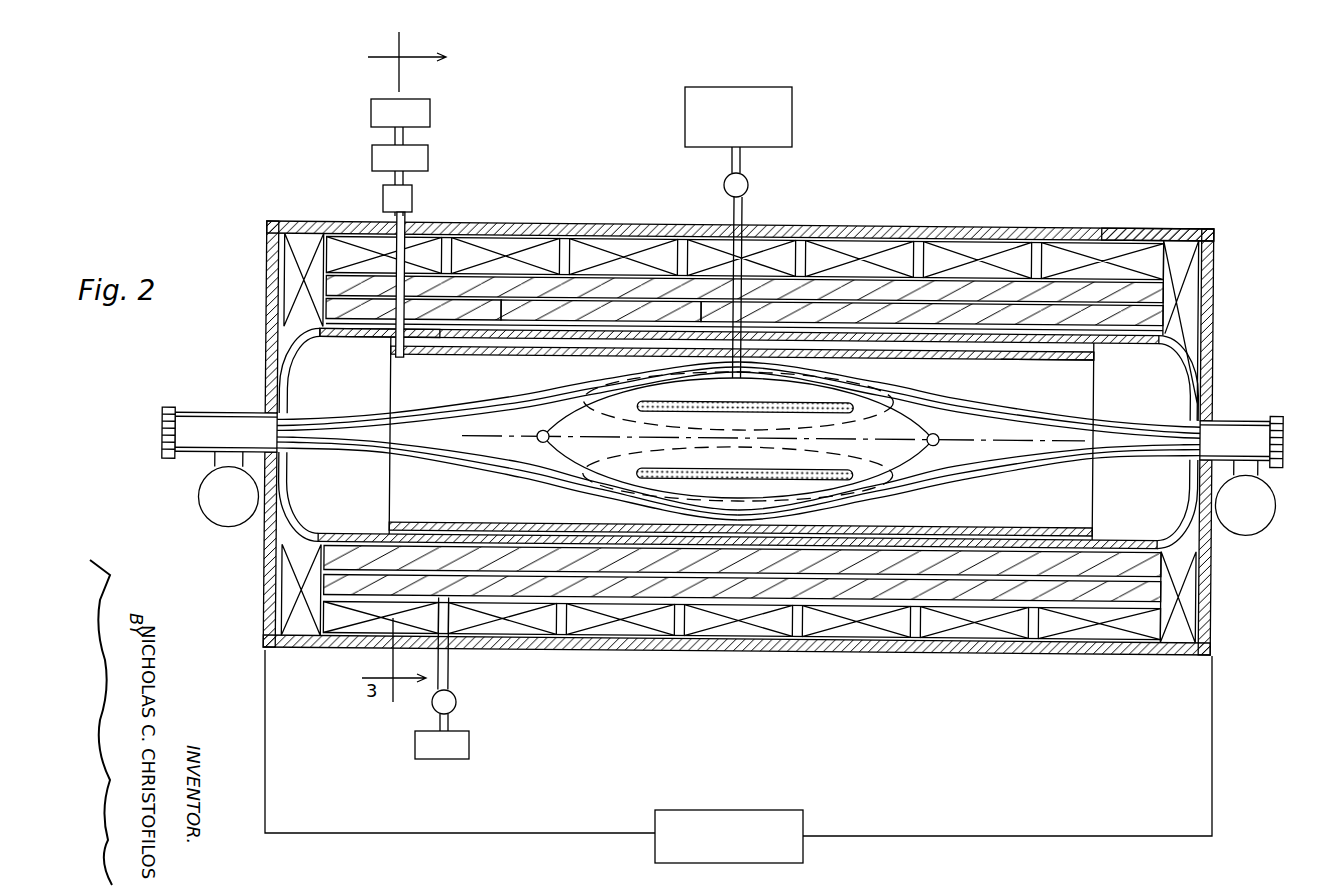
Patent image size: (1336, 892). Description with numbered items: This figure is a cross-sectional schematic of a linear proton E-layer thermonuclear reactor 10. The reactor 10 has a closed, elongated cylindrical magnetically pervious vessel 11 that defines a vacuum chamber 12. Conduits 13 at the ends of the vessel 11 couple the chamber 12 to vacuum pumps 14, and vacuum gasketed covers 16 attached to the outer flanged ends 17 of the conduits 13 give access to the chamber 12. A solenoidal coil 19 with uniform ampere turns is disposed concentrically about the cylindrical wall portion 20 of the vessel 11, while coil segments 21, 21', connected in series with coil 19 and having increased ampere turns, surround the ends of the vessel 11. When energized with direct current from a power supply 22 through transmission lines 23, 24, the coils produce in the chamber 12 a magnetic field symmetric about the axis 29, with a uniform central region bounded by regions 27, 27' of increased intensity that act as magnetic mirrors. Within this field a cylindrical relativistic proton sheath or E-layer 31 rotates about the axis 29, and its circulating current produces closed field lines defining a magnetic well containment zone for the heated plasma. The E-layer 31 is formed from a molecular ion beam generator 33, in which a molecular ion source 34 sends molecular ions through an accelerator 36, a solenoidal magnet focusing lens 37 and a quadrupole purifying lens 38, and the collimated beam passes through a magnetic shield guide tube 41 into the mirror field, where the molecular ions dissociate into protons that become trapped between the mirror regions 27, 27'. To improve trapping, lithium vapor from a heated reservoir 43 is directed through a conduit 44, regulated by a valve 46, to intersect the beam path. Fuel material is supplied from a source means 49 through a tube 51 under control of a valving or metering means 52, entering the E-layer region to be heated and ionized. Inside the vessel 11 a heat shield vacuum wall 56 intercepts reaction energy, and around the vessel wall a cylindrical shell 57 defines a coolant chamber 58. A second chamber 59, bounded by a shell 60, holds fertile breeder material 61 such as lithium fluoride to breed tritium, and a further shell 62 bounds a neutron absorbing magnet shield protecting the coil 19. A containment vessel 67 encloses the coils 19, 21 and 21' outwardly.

The proton E-layer thermonuclear reactor 10 is at (980, 200).
The vessel 11 is at (1190, 360).
The vacuum chamber 12 is at (458, 448).
The conduit 13 is at (255, 420).
The vacuum pump 14 is at (198, 497).
The vacuum gasketed cover 16 is at (165, 408).
The outer flanged end 17 is at (172, 412).
The solenoidal coil 19 is at (500, 226).
The cylindrical wall portion 20 is at (370, 340).
The coil segment 21 is at (298, 411).
The coil segment 21' is at (1195, 419).
The power supply 22 is at (795, 812).
The transmission line 23 is at (445, 833).
The transmission line 24 is at (925, 836).
The region of increased magnetic field intensity 27 is at (553, 439).
The region of increased magnetic field intensity 27' is at (1004, 443).
The axis 29 is at (940, 442).
The E-layer 31 is at (710, 402).
The molecular ion beam generator 33 is at (360, 213).
The molecular ion source 34 is at (400, 113).
The accelerator 36 is at (405, 130).
The solenoidal magnet focusing lens 37 is at (400, 158).
The quadrupole purifying lens 38 is at (397, 198).
The magnetic shield guide tube 41 is at (445, 225).
The heated reservoir 43 is at (442, 736).
The conduit 44 is at (450, 655).
The valve 46 is at (458, 697).
The fuel source means 49 is at (793, 100).
The tube 51 is at (742, 155).
The valving or metering means 52 is at (725, 180).
The heat shield vacuum wall 56 is at (1082, 362).
The cylindrical shell 57 is at (1153, 323).
The chamber 58 is at (1020, 333).
The second chamber 59 is at (455, 315).
The shell 60 is at (1150, 306).
The fertile breeder material 61 is at (548, 322).
The shell 62 is at (1137, 280).
The containment vessel 67 is at (1150, 230).